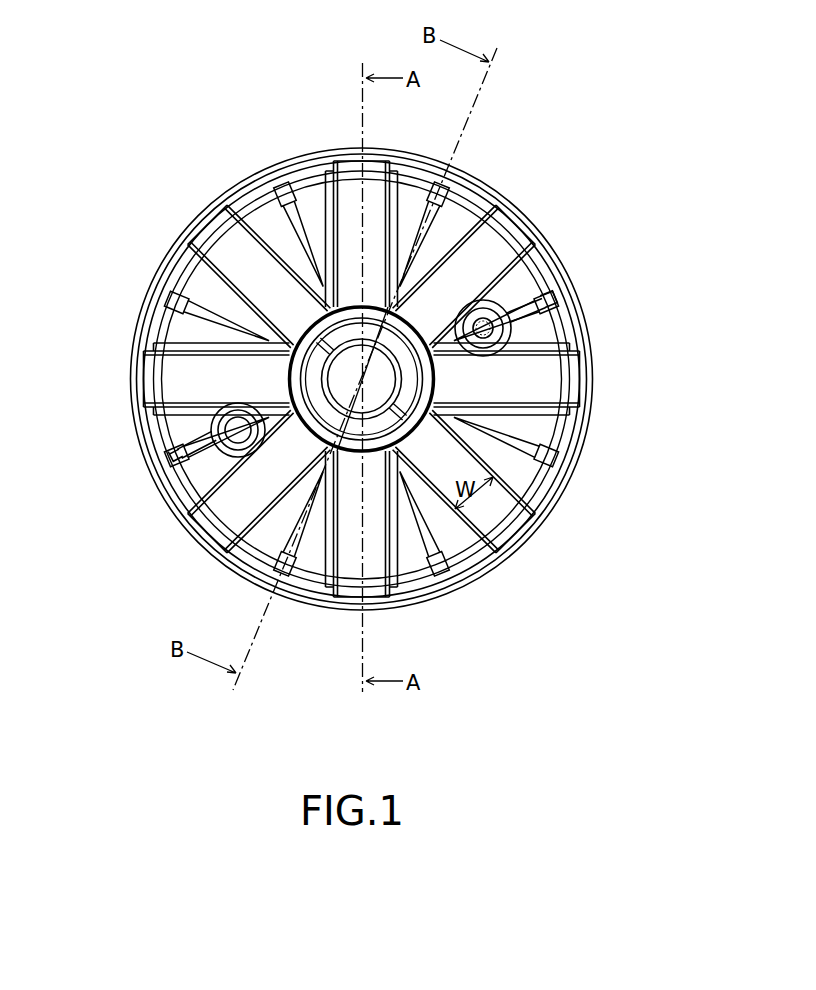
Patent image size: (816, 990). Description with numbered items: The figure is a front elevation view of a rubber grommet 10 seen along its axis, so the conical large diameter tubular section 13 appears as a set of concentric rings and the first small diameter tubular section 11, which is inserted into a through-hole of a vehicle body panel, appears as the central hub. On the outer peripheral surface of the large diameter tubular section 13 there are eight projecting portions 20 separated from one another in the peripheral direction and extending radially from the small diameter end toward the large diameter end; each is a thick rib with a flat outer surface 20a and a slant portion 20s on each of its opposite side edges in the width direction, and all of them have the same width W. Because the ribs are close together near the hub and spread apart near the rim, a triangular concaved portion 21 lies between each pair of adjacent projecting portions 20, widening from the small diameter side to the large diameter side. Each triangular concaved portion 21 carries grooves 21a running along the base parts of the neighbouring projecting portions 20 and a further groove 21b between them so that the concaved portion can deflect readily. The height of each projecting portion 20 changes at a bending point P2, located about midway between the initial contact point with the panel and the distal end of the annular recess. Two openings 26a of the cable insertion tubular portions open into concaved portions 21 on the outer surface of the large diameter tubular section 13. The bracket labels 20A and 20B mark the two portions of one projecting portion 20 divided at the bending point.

The grommet 10 is at (76, 51).
The first small diameter tubular section 11 is at (372, 418).
The large diameter tubular section 13 is at (556, 437).
The projecting portion 20 is at (366, 355).
The first rib portion 20A is at (215, 491).
The second rib portion 20B is at (212, 538).
The outer surface 20a is at (522, 515).
The slant portion 20s is at (522, 490).
The triangular concaved portion 21 is at (361, 334).
The groove 21a is at (275, 200).
The groove 21b is at (258, 189).
The opening 26a is at (502, 315).
The bending point P2 is at (270, 540).